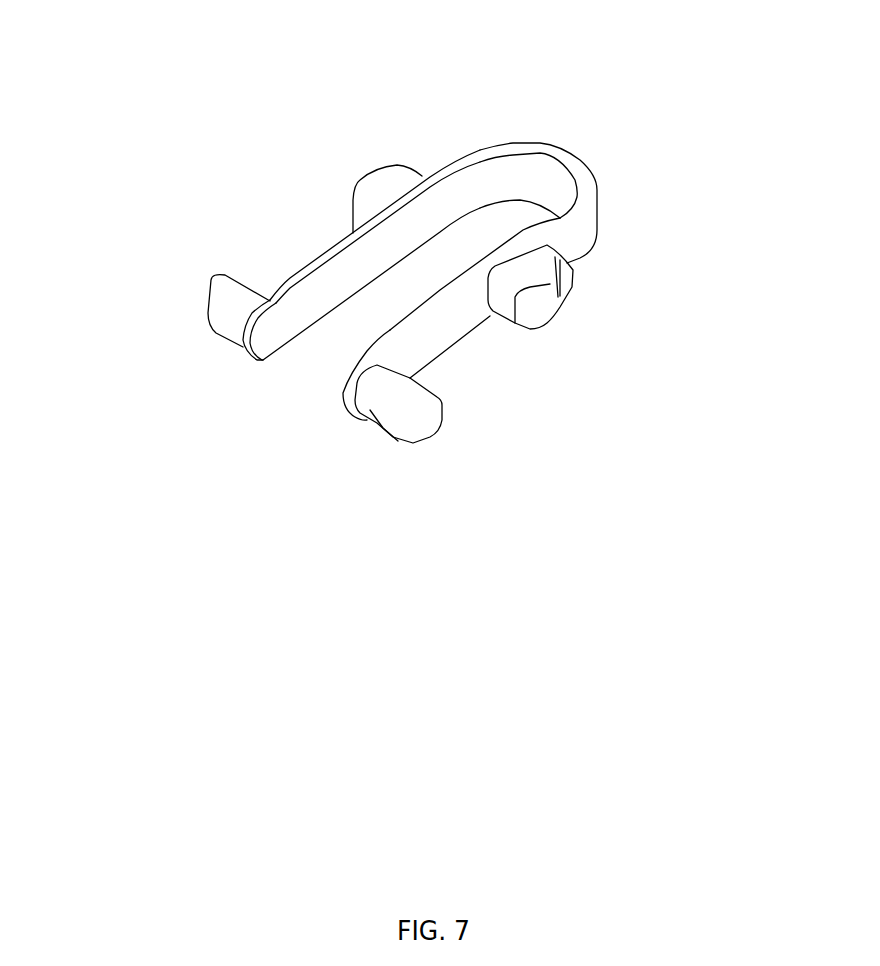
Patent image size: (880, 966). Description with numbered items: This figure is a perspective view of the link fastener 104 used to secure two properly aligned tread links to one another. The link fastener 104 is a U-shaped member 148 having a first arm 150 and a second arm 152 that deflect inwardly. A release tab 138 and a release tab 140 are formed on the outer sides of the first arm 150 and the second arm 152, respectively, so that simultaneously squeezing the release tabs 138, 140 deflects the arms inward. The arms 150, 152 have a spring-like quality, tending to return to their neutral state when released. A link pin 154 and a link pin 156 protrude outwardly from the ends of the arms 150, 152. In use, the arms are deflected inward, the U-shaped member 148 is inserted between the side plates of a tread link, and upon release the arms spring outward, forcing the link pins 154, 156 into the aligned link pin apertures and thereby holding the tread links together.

The link fastener 104 is at (207, 188).
The release tab 138 is at (422, 175).
The release tab 140 is at (577, 290).
The U-shaped member 148 is at (592, 172).
The first arm 150 is at (300, 276).
The second arm 152 is at (430, 342).
The link pin 154 is at (228, 342).
The link pin 156 is at (383, 432).